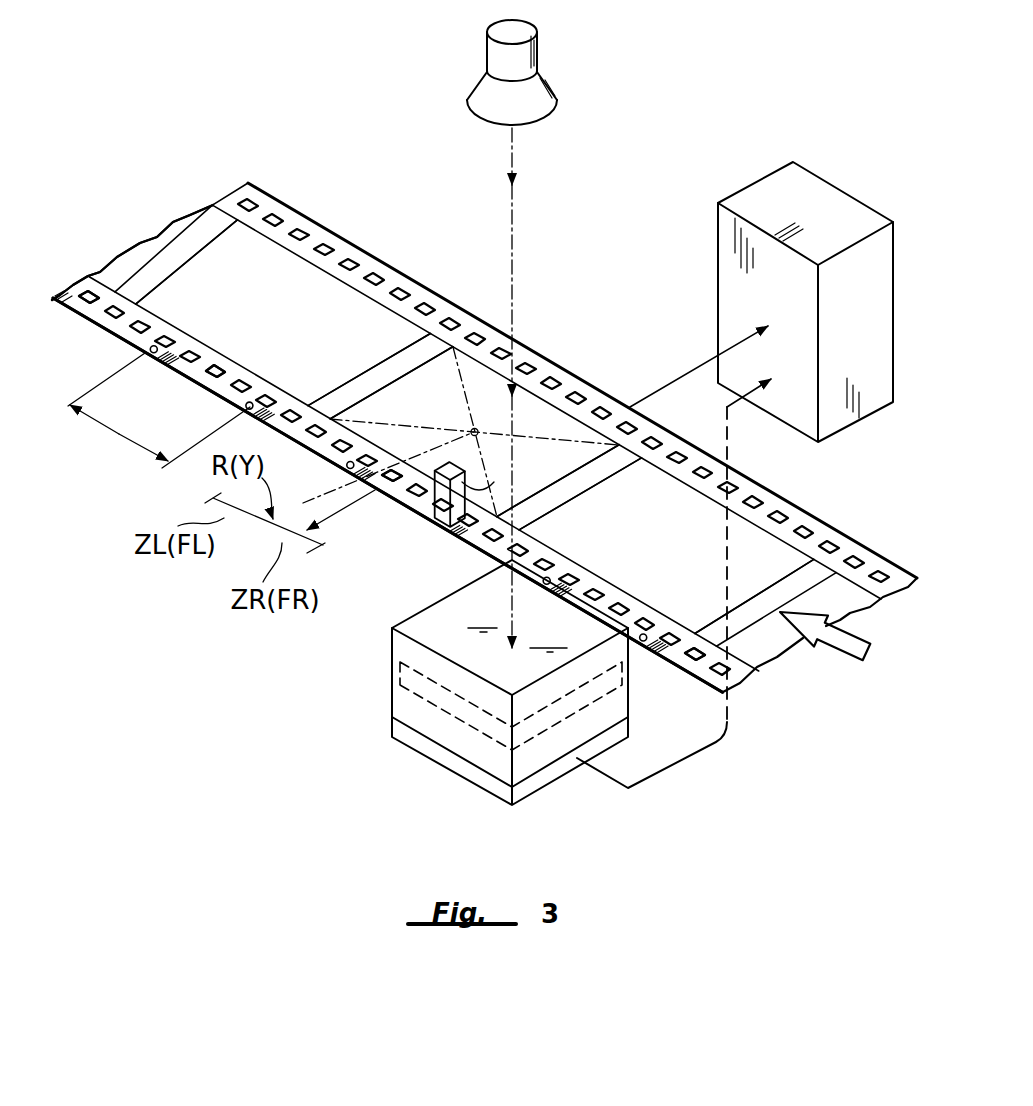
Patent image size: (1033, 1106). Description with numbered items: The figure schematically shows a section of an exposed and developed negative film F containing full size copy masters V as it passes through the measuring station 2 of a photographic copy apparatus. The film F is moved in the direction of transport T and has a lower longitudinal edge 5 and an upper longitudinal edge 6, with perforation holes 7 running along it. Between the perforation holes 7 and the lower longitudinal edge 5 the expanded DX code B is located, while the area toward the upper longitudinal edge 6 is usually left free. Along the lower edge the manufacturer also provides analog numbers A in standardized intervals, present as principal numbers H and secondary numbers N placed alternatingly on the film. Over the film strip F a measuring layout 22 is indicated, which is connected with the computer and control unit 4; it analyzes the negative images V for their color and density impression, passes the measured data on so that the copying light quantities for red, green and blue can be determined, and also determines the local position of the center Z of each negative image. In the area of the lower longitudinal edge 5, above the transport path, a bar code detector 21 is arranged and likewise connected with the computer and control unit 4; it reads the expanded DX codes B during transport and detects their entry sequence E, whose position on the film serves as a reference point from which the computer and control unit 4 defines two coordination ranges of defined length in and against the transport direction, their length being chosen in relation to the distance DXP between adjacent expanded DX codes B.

The measuring station 2 is at (707, 105).
The computer and control unit 4 is at (815, 185).
The lower longitudinal edge 5 is at (697, 683).
The upper longitudinal edge 6 is at (857, 534).
The perforation holes 7 is at (118, 332).
The bar code detector 21 is at (447, 517).
The measuring layout 22 is at (552, 73).
The master material F is at (222, 182).
The copy masters V is at (264, 253).
The expanded DX code B is at (106, 302).
The principal number H is at (156, 348).
The secondary number N is at (253, 404).
The entry sequence E is at (165, 367).
The analog number A is at (140, 356).
The center of negative image Z is at (470, 428).
The direction of transport T is at (824, 650).
The distance of adjacent expanded DX codes DXP is at (159, 414).